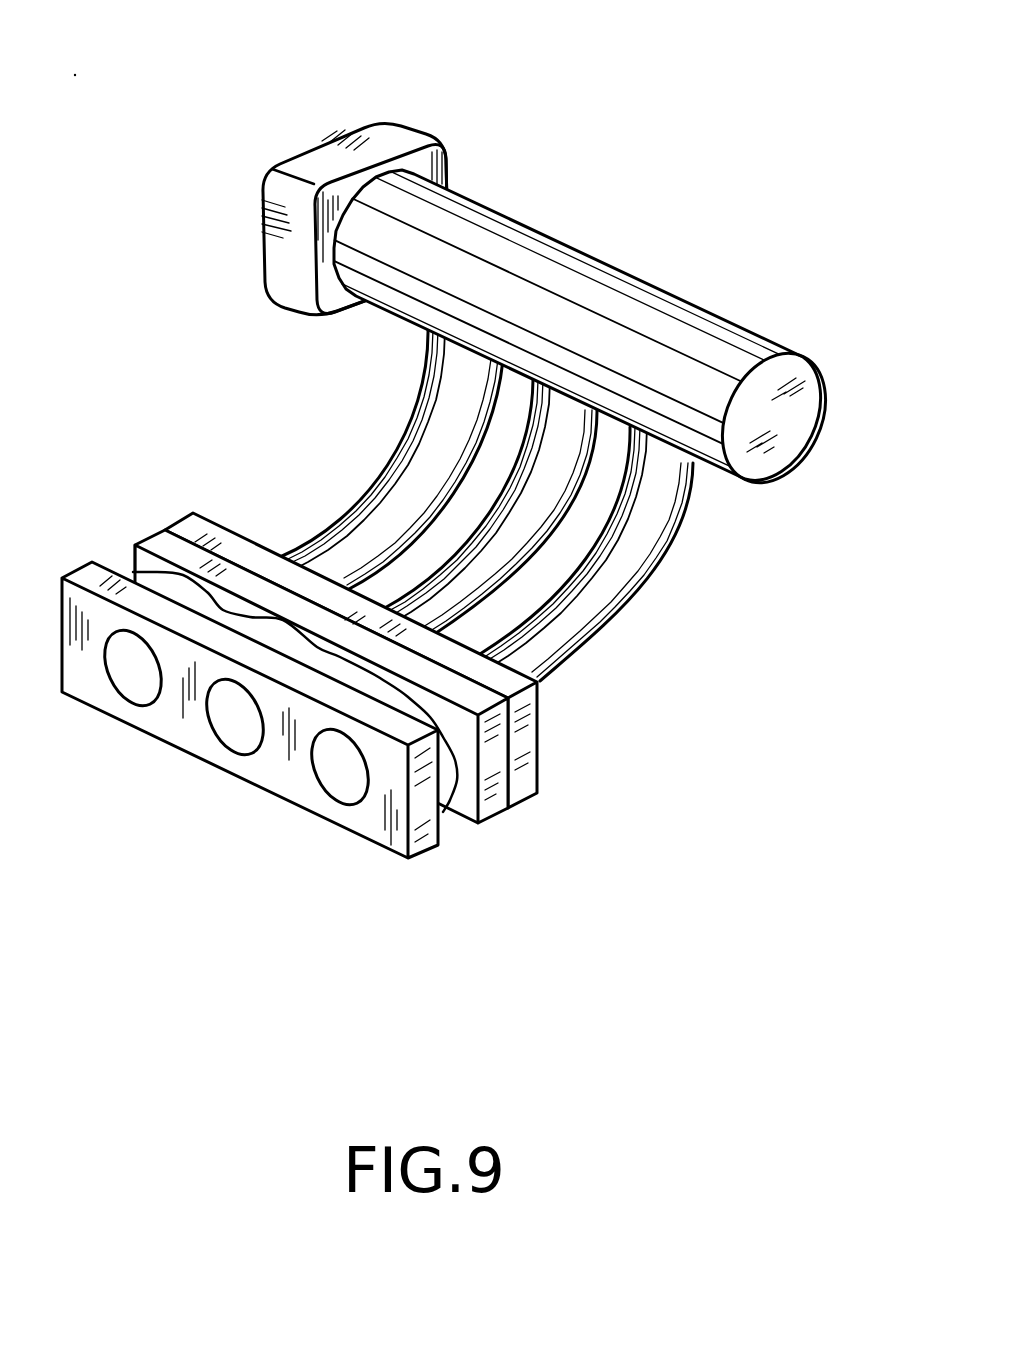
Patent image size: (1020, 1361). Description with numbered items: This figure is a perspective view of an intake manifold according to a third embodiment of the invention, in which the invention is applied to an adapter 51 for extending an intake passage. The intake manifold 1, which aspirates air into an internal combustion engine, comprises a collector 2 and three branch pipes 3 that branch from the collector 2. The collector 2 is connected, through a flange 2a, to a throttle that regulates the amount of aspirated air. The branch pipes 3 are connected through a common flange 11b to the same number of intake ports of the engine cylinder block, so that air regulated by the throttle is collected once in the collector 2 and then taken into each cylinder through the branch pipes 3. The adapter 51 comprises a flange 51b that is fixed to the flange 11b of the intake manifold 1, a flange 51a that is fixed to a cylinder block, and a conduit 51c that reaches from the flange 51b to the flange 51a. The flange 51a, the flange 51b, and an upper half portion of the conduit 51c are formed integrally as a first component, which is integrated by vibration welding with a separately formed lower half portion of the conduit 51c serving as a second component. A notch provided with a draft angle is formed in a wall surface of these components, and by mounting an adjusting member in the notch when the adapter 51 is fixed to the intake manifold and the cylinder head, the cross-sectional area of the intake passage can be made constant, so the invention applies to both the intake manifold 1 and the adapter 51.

The intake manifold 1 is at (465, 491).
The collector 2 is at (708, 338).
The flange 2a is at (392, 124).
The branch pipes 3 is at (627, 620).
The common flange 11b is at (534, 753).
The adapter 51 is at (320, 744).
The flange 51a is at (292, 828).
The flange 51b is at (497, 815).
The conduit 51c is at (460, 805).